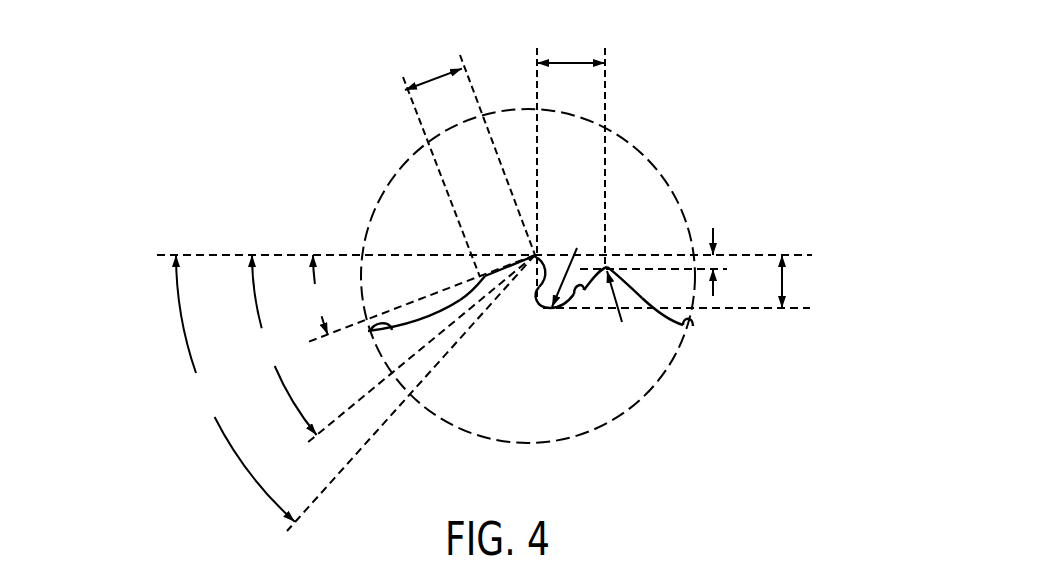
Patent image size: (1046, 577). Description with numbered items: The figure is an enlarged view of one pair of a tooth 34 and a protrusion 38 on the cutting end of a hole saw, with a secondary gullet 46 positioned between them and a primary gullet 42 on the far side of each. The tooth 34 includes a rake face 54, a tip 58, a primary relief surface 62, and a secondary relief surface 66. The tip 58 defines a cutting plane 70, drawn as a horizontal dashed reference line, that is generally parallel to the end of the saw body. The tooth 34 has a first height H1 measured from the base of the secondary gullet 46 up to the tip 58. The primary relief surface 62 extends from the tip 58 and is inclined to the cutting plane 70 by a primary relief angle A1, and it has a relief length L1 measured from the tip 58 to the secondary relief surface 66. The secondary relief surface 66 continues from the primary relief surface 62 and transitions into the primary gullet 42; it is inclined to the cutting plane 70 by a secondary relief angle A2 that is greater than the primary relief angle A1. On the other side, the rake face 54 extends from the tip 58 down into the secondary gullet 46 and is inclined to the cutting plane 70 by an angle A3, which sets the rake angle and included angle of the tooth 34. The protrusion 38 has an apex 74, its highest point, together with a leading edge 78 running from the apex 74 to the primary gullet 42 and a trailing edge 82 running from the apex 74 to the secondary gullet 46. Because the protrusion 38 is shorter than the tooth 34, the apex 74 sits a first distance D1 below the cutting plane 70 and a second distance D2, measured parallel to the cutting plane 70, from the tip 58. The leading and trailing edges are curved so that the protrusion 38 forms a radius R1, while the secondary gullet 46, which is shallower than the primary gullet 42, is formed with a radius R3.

The tooth 34 is at (483, 294).
The protrusion 38 is at (614, 276).
The primary gullet 42 is at (369, 329).
The secondary gullet 46 is at (531, 301).
The rake face 54 is at (528, 272).
The tip 58 is at (537, 253).
The primary relief surface 62 is at (498, 273).
The secondary relief surface 66 is at (458, 294).
The cutting plane 70 is at (207, 253).
The apex 74 is at (607, 263).
The leading edge 78 is at (617, 277).
The trailing edge 82 is at (576, 297).
The primary relief angle A1 is at (318, 295).
The secondary relief angle A2 is at (284, 345).
The angle A3 is at (235, 388).
The relief length L1 is at (433, 80).
The first distance D1 is at (713, 228).
The second distance D2 is at (570, 62).
The first height H1 is at (782, 281).
The radius R1 is at (619, 313).
The radius R3 is at (570, 261).